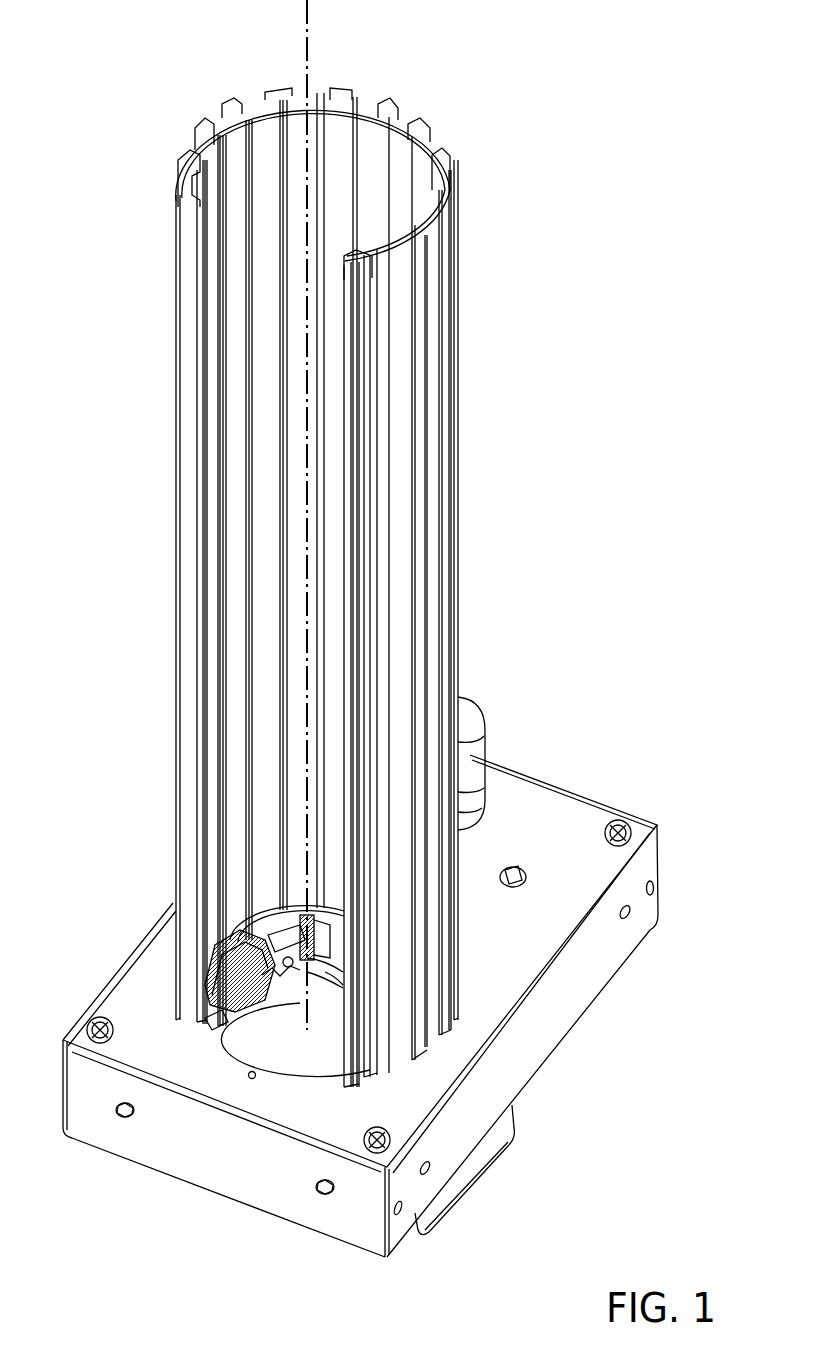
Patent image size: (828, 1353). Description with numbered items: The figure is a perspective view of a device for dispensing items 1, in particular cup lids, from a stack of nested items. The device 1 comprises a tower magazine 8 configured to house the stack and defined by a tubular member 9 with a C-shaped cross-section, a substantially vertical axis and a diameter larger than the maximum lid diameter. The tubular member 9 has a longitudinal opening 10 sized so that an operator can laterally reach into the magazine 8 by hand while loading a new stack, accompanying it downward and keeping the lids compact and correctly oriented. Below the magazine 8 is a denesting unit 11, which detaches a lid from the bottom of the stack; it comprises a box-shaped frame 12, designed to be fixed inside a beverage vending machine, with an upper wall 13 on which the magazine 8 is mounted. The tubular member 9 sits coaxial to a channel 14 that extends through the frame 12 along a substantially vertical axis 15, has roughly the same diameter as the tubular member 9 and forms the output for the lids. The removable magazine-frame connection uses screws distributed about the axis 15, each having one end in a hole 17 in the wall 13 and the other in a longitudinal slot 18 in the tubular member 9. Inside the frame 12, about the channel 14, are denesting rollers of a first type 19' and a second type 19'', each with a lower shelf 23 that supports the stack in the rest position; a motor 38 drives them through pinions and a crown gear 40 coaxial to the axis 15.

The device for dispensing items 1 is at (632, 272).
The tower magazine 8 is at (465, 560).
The tubular member 9 is at (445, 400).
The longitudinal opening 10 is at (341, 624).
The denesting unit 11 is at (528, 1107).
The box-shaped frame 12 is at (268, 1198).
The upper wall 13 is at (576, 830).
The channel 14 is at (300, 789).
The vertical axis 15 is at (305, 20).
The hole 17 is at (250, 1080).
The longitudinal slot 18 is at (458, 207).
The denesting roller of the first type 19' is at (166, 963).
The denesting roller of the second type 19'' is at (482, 967).
The shelf 23 is at (213, 1032).
The motor 38 is at (488, 752).
The crown gear 40 is at (255, 1012).